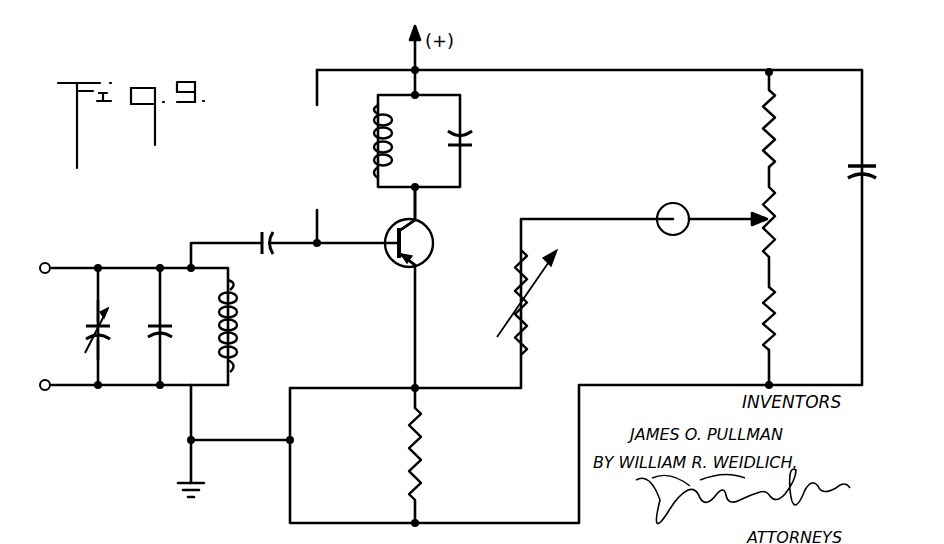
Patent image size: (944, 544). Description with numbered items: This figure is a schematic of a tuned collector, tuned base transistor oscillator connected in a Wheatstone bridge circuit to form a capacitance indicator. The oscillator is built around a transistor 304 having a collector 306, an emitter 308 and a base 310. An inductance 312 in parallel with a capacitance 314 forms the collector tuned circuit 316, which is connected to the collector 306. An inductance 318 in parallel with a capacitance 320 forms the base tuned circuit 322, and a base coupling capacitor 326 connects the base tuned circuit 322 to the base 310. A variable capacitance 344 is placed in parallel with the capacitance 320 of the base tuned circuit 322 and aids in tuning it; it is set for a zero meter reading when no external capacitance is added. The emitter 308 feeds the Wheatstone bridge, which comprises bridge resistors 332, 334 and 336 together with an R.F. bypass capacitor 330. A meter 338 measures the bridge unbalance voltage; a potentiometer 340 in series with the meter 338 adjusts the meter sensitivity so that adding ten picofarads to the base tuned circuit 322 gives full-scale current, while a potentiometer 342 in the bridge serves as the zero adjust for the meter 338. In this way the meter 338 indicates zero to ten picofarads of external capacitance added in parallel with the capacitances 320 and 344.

The transistor 304 is at (433, 245).
The collector 306 is at (418, 212).
The emitter 308 is at (402, 268).
The base 310 is at (390, 252).
The inductance 312 is at (390, 136).
The capacitance 314 is at (474, 138).
The collector tuned circuit 316 is at (430, 168).
The inductance 318 is at (240, 330).
The capacitance 320 is at (168, 323).
The base tuned circuit 322 is at (208, 369).
The base coupling capacitor 326 is at (270, 232).
The R.F. bypass capacitor 330 is at (848, 167).
The bridge resistor 332 is at (420, 453).
The bridge resistor 334 is at (765, 120).
The bridge resistor 336 is at (765, 308).
The meter 338 is at (688, 187).
The potentiometer 340 is at (525, 318).
The potentiometer 342 is at (776, 240).
The variable capacitance 344 is at (92, 323).